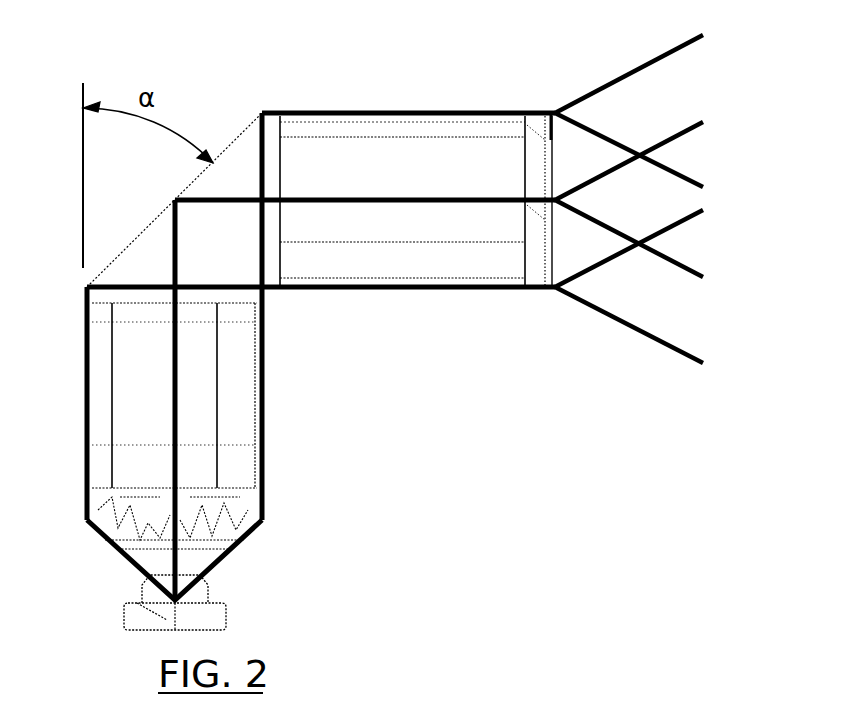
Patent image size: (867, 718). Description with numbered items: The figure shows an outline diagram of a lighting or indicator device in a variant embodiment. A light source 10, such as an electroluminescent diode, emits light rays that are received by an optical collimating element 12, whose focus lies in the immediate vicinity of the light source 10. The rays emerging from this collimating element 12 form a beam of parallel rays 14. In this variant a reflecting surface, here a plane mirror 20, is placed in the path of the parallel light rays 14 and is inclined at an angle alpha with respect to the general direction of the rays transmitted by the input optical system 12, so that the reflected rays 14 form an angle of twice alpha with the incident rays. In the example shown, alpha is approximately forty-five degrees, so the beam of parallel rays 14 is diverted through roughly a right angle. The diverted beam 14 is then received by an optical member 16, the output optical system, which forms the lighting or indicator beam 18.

The light source 10 is at (203, 588).
The optical collimating element 12 is at (210, 528).
The beam of parallel rays 14 is at (195, 412).
The optical member 16 is at (548, 232).
The lighting or indicator beam 18 is at (713, 380).
The plane mirror 20 is at (237, 138).